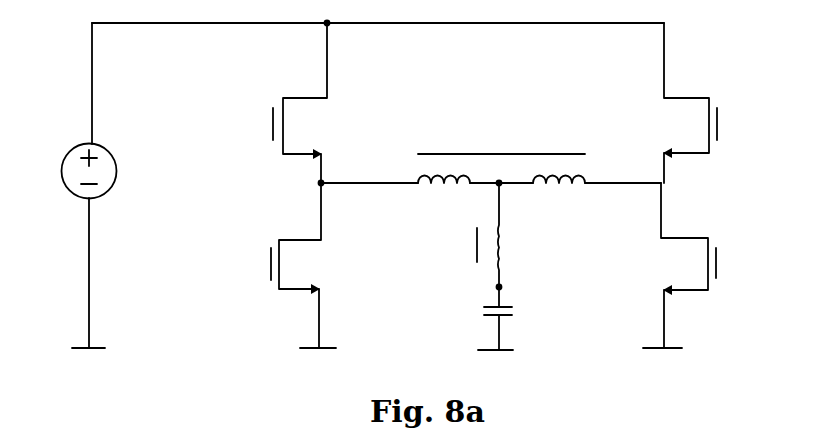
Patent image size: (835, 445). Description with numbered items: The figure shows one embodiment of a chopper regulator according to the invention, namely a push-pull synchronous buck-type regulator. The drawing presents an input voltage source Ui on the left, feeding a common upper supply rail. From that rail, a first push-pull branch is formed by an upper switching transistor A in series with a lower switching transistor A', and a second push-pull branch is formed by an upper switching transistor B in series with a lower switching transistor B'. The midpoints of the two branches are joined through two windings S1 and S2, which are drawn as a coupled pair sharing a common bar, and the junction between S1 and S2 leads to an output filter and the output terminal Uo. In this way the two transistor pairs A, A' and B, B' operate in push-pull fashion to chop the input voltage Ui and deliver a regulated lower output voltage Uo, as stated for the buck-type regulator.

The input voltage source Ui is at (72, 246).
The first upper switching transistor A is at (262, 103).
The first lower switching transistor A' is at (261, 265).
The first coupled inductor winding S1 is at (449, 155).
The second coupled inductor winding S2 is at (546, 155).
The output voltage node with output inductor and capacitor Uo is at (499, 287).
The second upper switching transistor B is at (721, 103).
The second lower switching transistor B' is at (714, 265).